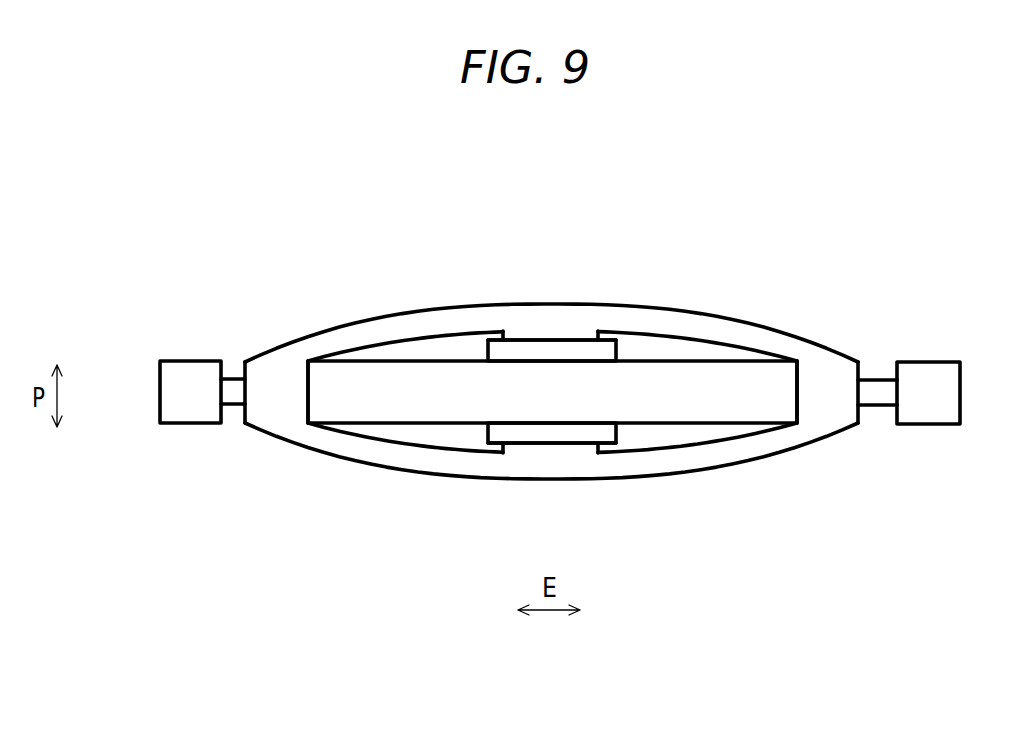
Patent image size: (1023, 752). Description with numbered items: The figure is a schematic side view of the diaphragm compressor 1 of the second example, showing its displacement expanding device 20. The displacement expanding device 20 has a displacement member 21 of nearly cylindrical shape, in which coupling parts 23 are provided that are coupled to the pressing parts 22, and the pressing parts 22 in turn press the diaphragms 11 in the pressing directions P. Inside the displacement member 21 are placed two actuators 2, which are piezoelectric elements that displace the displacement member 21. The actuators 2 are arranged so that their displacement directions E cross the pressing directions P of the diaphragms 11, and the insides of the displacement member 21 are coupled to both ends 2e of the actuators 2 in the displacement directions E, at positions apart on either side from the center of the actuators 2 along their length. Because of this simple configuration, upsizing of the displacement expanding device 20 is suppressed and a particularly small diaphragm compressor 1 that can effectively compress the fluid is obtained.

The diaphragm compressor 1 is at (584, 368).
The actuator 2 is at (413, 400).
The ends of the actuators 2e is at (308, 392).
The diaphragm 11 is at (538, 352).
The displacement expanding device 20 is at (407, 315).
The displacement member 21 is at (320, 332).
The pressing part 22 is at (552, 340).
The coupling part 23 is at (612, 334).